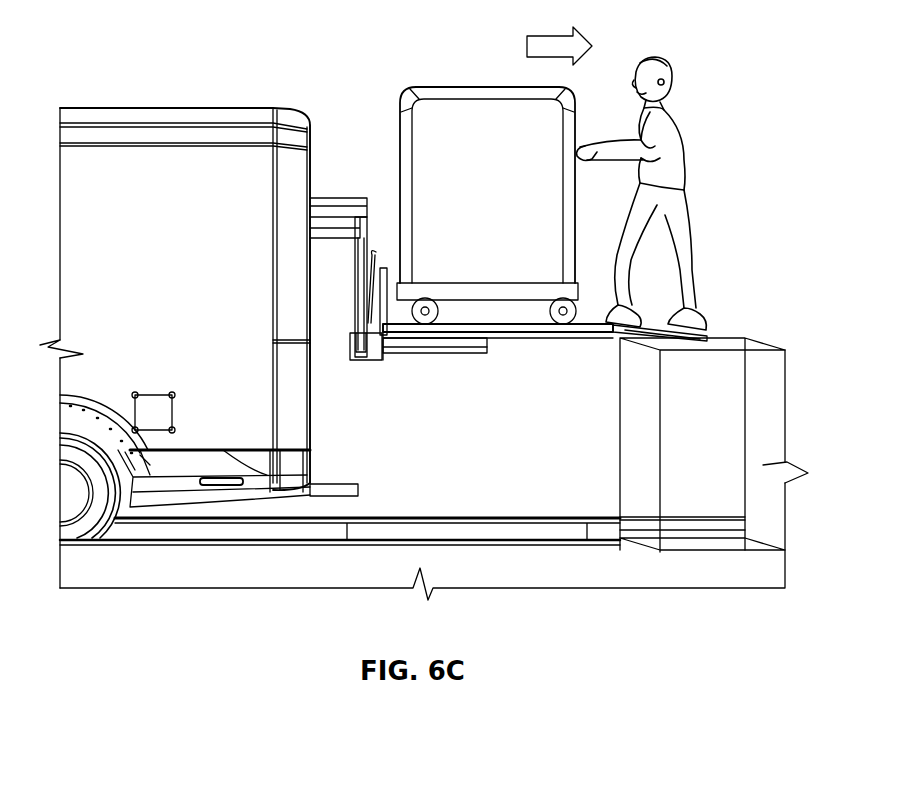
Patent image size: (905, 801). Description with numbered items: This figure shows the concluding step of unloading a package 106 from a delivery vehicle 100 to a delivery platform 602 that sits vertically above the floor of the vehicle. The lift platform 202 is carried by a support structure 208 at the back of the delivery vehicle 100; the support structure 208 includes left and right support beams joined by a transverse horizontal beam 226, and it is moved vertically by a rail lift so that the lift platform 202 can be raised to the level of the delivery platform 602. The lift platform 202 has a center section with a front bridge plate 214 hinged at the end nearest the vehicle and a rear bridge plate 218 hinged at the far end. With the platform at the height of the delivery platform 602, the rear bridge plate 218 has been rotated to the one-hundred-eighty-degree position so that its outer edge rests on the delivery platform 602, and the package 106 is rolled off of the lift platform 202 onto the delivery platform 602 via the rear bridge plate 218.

The delivery vehicle 100 is at (176, 100).
The package 106 is at (463, 76).
The lift platform 202 is at (524, 343).
The support structure 208 is at (332, 192).
The front bridge plate 214 is at (386, 278).
The rear bridge plate 218 is at (645, 342).
The transverse horizontal beam 226 is at (360, 362).
The delivery platform 602 is at (730, 337).